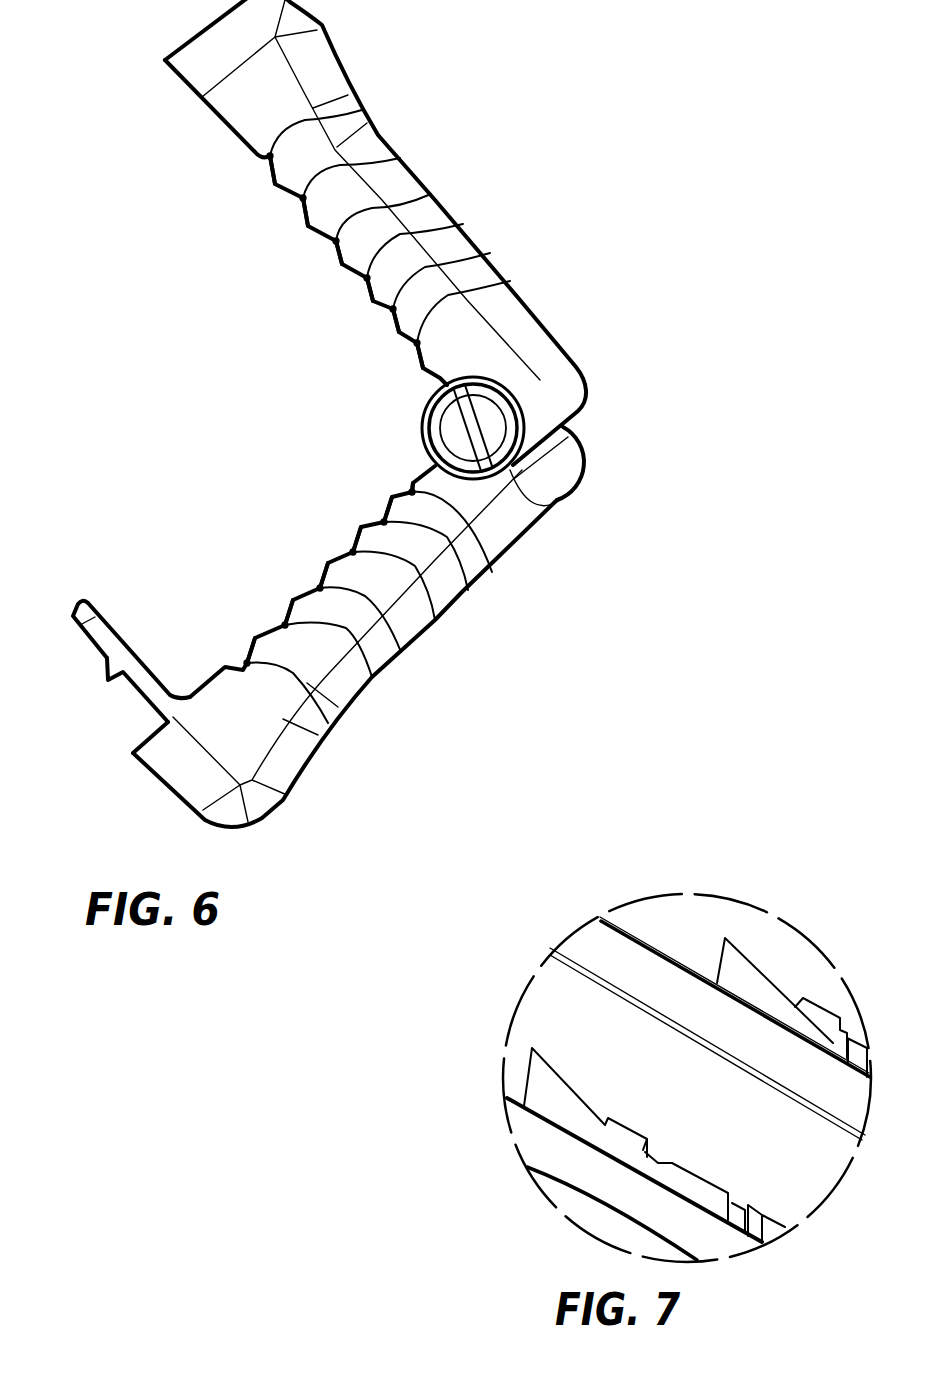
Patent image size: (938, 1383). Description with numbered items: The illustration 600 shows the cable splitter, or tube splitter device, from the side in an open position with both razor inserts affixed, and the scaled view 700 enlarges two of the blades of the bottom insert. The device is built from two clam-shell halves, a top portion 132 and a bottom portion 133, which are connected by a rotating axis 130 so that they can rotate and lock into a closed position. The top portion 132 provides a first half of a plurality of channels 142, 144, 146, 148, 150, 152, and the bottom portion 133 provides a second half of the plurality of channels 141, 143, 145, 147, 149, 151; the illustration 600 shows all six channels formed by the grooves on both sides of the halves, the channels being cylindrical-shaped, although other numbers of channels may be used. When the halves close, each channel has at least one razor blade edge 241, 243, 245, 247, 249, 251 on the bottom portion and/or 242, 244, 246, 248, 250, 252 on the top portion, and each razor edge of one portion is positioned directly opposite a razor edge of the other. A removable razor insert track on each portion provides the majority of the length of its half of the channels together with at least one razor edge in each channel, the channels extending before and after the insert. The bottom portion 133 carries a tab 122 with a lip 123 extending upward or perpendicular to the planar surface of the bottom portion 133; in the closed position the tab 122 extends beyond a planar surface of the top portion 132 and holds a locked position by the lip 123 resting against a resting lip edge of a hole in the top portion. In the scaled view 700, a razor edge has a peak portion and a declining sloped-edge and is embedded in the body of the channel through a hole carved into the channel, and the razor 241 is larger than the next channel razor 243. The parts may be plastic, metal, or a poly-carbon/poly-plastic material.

In FIG. 6, the illustration 600 is at (122, 26).
In FIG. 7, the enlarged detail view 700 is at (557, 884).
In FIG. 6, the rotating axis 130 is at (535, 520).
In FIG. 6, the top portion 132 is at (540, 347).
In FIG. 6, the bottom portion 133 is at (562, 477).
In FIG. 6, the tab 122 is at (93, 628).
In FIG. 6, the lip 123 is at (110, 680).
In FIG. 6, the channel second half 141 is at (328, 723).
In FIG. 6, the channel second half 143 is at (372, 677).
In FIG. 6, the channel second half 145 is at (401, 652).
In FIG. 6, the channel second half 147 is at (435, 620).
In FIG. 6, the channel second half 149 is at (468, 590).
In FIG. 6, the channel second half 151 is at (492, 572).
In FIG. 6, the channel first half 142 is at (362, 110).
In FIG. 6, the channel first half 144 is at (400, 158).
In FIG. 6, the channel first half 146 is at (431, 194).
In FIG. 6, the channel first half 148 is at (463, 224).
In FIG. 6, the channel first half 150 is at (490, 253).
In FIG. 6, the channel first half 152 is at (510, 281).
In FIG. 6, the razor blade edge 241 is at (247, 663).
In FIG. 7, the razor blade edge 241 is at (523, 1093).
In FIG. 6, the razor blade edge 243 is at (285, 625).
In FIG. 7, the razor blade edge 243 is at (740, 953).
In FIG. 6, the razor blade edge 245 is at (320, 588).
In FIG. 6, the razor blade edge 247 is at (353, 552).
In FIG. 6, the razor blade edge 249 is at (384, 522).
In FIG. 6, the razor blade edge 251 is at (412, 492).
In FIG. 6, the razor blade edge 242 is at (270, 156).
In FIG. 6, the razor blade edge 244 is at (303, 198).
In FIG. 6, the razor blade edge 246 is at (336, 241).
In FIG. 6, the razor blade edge 248 is at (367, 278).
In FIG. 6, the razor blade edge 250 is at (393, 309).
In FIG. 6, the razor blade edge 252 is at (417, 343).